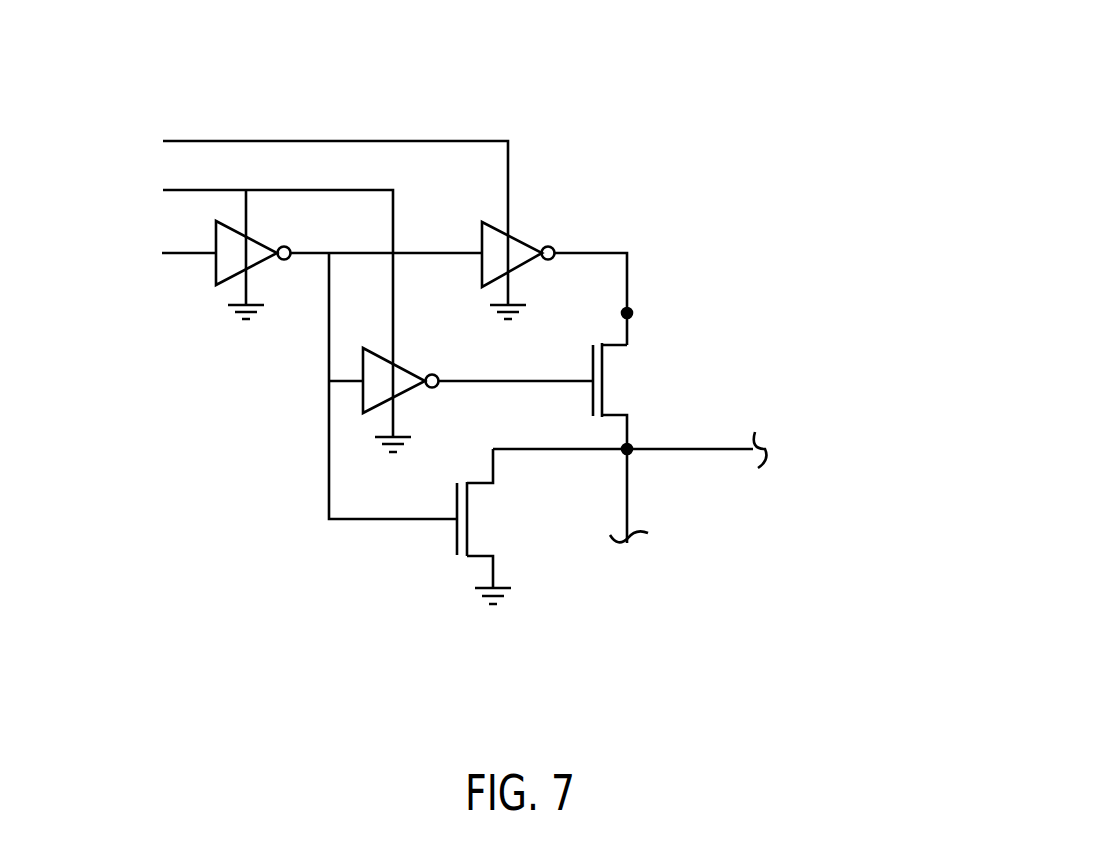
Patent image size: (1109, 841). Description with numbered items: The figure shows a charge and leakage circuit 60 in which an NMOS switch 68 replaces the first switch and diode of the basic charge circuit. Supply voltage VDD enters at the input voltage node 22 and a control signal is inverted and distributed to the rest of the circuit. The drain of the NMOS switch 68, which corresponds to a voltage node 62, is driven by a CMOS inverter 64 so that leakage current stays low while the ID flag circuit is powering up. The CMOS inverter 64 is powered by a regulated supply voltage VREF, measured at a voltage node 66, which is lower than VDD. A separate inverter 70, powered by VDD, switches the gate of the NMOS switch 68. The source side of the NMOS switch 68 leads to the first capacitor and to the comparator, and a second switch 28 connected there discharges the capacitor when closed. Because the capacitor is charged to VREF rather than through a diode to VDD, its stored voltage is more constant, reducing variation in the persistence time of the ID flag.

The charge and leakage circuit 60 is at (493, 312).
The voltage node 66 is at (442, 132).
The input voltage node 22 is at (195, 185).
The CMOS inverter 64 is at (522, 235).
The voltage node 62 is at (638, 304).
The NMOS switch 68 is at (704, 346).
The inverter 70 is at (409, 397).
The second switch 28 is at (435, 539).